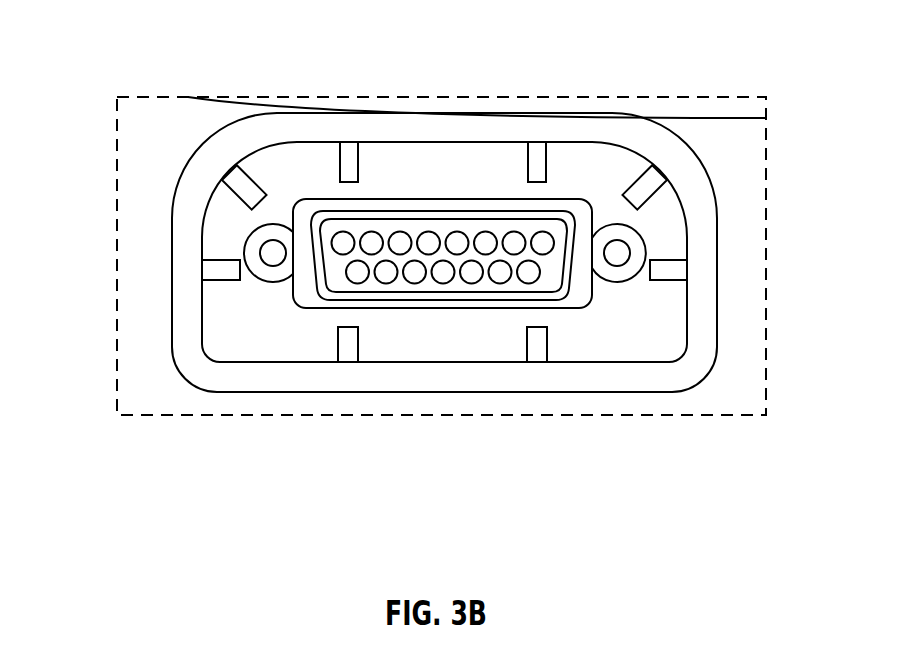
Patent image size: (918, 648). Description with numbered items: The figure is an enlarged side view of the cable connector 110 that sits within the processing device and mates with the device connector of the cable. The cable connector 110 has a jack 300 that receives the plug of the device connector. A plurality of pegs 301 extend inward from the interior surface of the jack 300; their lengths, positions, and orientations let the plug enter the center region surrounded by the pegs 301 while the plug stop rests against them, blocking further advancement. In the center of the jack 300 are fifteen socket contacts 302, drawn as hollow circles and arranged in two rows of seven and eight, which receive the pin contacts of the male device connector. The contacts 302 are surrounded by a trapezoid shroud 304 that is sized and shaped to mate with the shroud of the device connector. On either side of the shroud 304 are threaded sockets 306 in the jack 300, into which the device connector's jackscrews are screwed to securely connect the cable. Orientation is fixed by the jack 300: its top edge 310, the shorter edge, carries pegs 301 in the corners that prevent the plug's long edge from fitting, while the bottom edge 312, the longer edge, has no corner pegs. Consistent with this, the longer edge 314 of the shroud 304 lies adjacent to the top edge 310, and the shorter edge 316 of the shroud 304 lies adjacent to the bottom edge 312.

The cable connector 110 is at (522, 131).
The jack 300 is at (292, 347).
The pegs 301 is at (647, 187).
The socket contacts 302 is at (500, 272).
The shroud 304 is at (350, 211).
The threaded sockets 306 is at (262, 251).
The top edge 310 is at (378, 131).
The bottom edge 312 is at (480, 377).
The longer edge 314 is at (493, 215).
The shorter edge 316 is at (373, 300).